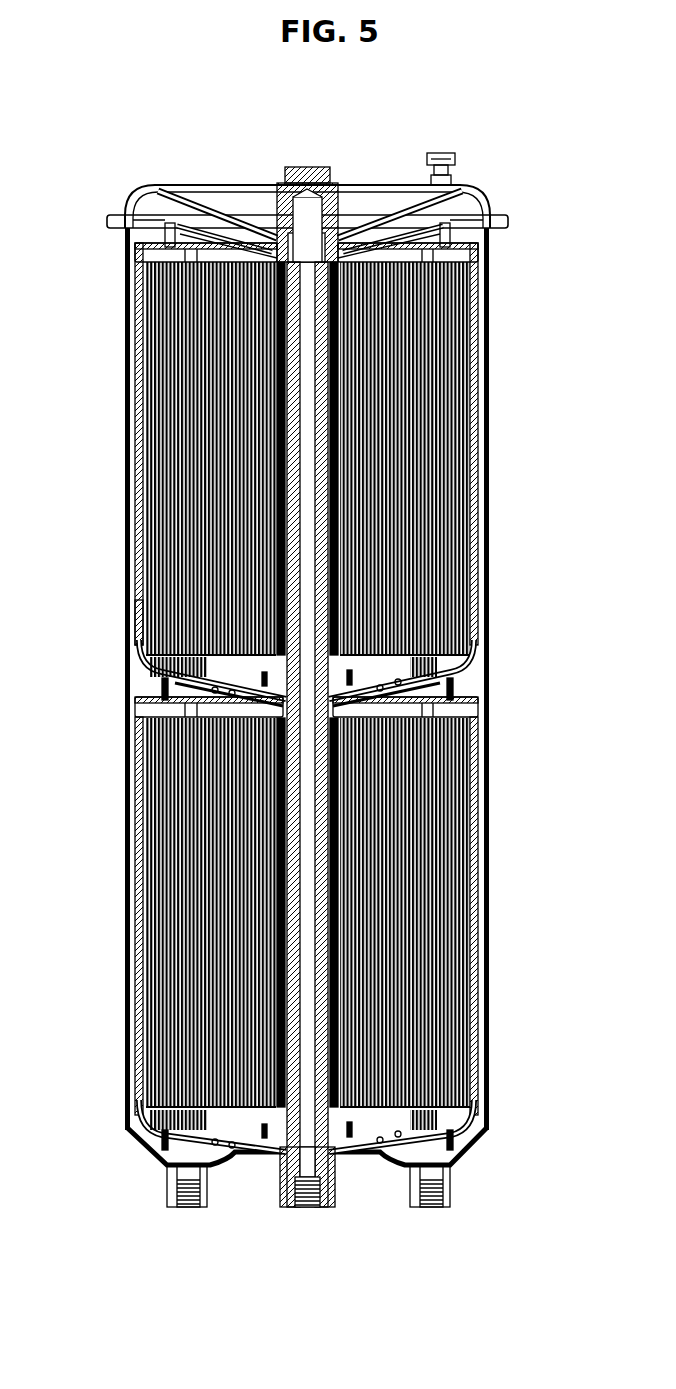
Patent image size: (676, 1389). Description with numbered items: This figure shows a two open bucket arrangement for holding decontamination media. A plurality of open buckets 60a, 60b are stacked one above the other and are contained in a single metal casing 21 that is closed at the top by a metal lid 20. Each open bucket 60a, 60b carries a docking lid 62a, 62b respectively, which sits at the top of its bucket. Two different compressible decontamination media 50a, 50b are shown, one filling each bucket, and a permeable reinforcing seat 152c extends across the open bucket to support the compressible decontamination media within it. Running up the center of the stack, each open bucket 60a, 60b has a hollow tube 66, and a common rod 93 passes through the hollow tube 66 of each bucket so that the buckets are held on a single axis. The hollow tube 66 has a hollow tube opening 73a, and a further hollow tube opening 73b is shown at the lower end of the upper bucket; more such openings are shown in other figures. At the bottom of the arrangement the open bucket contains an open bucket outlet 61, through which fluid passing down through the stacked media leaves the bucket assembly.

The metal lid 20 is at (163, 185).
The metal casing 21 is at (490, 458).
The compressible decontamination media 50a is at (242, 904).
The compressible decontamination media 50b is at (417, 376).
The open bucket 60a is at (137, 990).
The open bucket 60b is at (137, 305).
The open bucket outlet 61 is at (340, 1150).
The docking lid 62a is at (440, 697).
The docking lid 62b is at (433, 252).
The hollow tube 66 is at (280, 350).
The hollow tube opening 73a is at (340, 1110).
The hollow tube opening 73b is at (340, 661).
The common rod 93 is at (287, 385).
The permeable reinforcing seat 152c is at (137, 631).